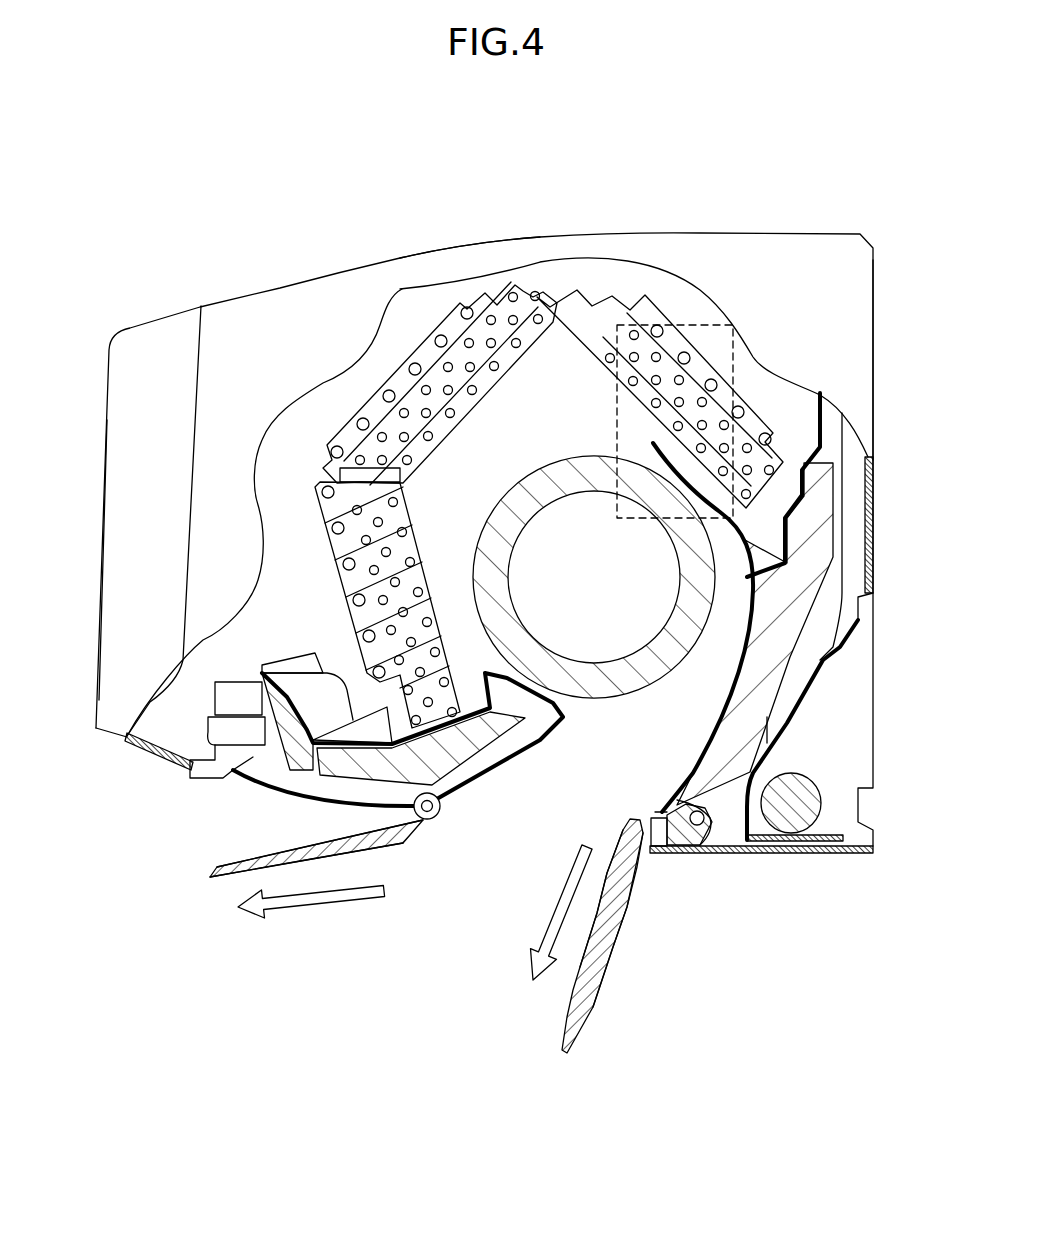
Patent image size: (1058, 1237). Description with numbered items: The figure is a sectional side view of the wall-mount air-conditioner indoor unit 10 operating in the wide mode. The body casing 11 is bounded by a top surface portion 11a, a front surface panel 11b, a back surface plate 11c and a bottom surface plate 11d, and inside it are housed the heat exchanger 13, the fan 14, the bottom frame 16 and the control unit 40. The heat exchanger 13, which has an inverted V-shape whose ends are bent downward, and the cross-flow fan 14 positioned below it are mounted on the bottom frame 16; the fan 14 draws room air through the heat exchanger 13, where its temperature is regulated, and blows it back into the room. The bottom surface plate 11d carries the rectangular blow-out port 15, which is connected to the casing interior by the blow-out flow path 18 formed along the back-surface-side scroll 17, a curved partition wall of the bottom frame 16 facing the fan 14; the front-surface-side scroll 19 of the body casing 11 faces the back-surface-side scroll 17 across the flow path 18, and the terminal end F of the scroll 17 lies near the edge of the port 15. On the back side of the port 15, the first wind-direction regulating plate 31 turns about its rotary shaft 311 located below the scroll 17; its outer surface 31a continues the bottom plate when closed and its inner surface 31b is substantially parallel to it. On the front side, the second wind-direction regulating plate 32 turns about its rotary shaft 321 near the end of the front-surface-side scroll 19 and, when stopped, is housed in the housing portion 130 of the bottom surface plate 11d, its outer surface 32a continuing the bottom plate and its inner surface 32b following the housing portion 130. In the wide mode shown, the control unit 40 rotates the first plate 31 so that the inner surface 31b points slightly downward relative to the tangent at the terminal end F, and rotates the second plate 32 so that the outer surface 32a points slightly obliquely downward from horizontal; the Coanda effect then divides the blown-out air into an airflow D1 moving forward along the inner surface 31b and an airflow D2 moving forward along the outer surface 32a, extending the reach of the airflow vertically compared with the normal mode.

The air-conditioner indoor unit 10 is at (115, 235).
The body casing 11 is at (795, 237).
The top surface portion 11a is at (570, 237).
The front surface panel 11b is at (100, 480).
The back surface plate 11c is at (877, 310).
The bottom surface plate 11d is at (805, 857).
The heat exchanger 13 is at (500, 290).
The fan 14 is at (515, 510).
The blow-out port 15 is at (566, 786).
The bottom frame 16 is at (796, 530).
The back-surface-side scroll 17 is at (727, 670).
The blow-out flow path 18 is at (693, 703).
The front-surface-side scroll 19 is at (512, 757).
The control unit 40 is at (703, 322).
The housing portion 130 is at (240, 800).
The first wind-direction regulating plate 31 is at (612, 925).
The outer surface 31a is at (605, 970).
The inner surface 31b is at (615, 870).
The rotary shaft 311 is at (700, 828).
The second wind-direction regulating plate 32 is at (228, 865).
The outer surface 32a is at (345, 866).
The inner surface 32b is at (332, 851).
The rotary shaft 321 is at (438, 820).
The terminal end F is at (660, 812).
The airflow D1 is at (544, 921).
The airflow D2 is at (311, 922).